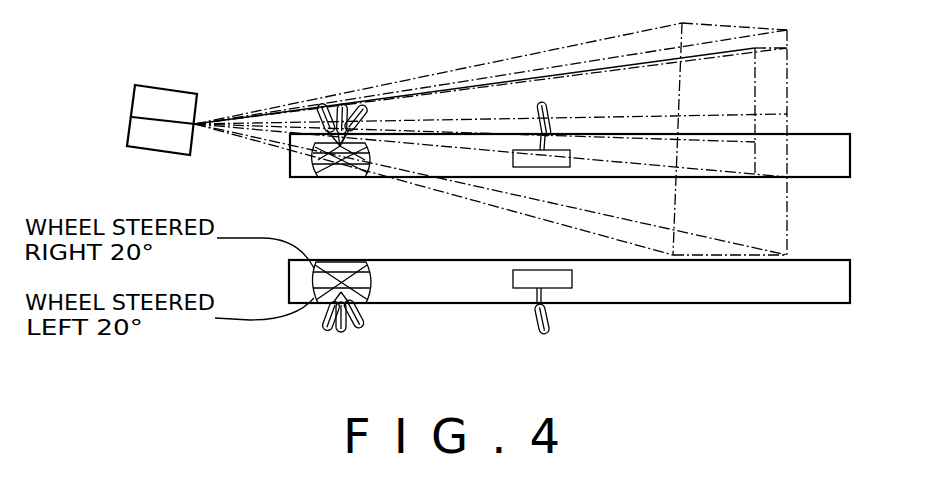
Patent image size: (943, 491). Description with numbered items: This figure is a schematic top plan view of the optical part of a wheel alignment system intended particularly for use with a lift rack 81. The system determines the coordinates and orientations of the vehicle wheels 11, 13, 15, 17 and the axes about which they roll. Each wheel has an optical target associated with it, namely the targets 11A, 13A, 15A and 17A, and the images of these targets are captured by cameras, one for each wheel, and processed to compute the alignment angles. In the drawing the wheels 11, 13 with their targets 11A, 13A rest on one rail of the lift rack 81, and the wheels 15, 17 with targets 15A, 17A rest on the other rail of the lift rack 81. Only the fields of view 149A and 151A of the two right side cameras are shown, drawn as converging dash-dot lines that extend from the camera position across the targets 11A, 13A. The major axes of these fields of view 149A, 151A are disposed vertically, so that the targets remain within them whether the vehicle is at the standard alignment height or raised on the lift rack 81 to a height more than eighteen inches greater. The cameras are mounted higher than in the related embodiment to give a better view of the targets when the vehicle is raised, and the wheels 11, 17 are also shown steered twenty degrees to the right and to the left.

The vehicle wheel 11 is at (340, 178).
The optical target 11A is at (366, 118).
The vehicle wheel 13 is at (550, 168).
The optical target 13A is at (553, 105).
The vehicle wheel 15 is at (547, 280).
The optical target 15A is at (535, 322).
The vehicle wheel 17 is at (335, 263).
The optical target 17A is at (365, 318).
The lift rack 81 is at (833, 174).
The field of view 149A is at (787, 200).
The field of view 151A is at (753, 78).